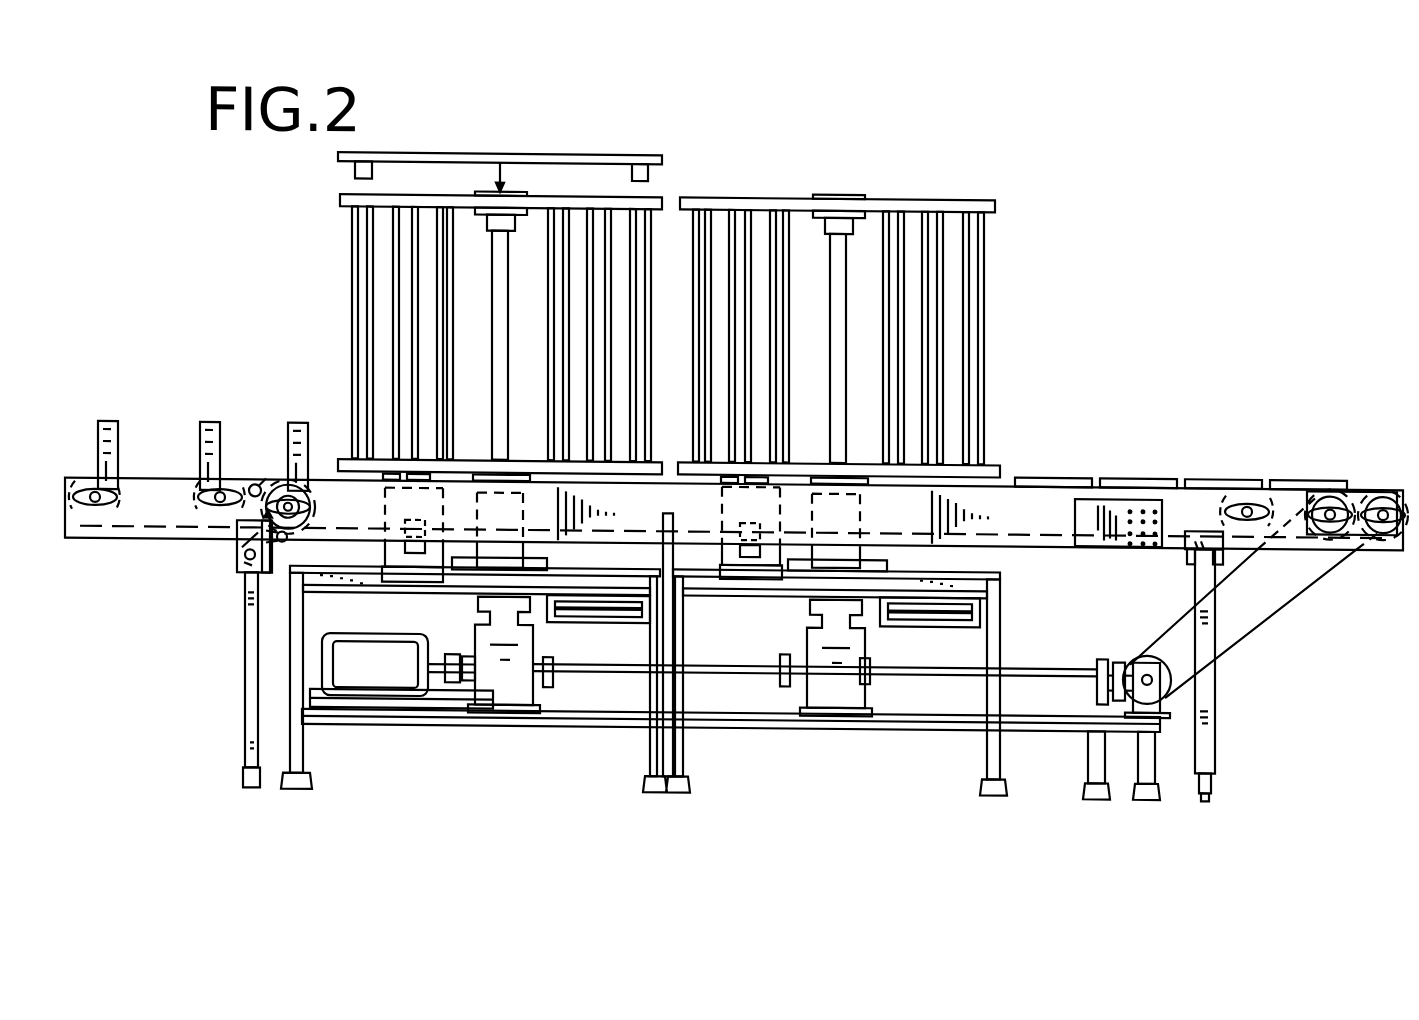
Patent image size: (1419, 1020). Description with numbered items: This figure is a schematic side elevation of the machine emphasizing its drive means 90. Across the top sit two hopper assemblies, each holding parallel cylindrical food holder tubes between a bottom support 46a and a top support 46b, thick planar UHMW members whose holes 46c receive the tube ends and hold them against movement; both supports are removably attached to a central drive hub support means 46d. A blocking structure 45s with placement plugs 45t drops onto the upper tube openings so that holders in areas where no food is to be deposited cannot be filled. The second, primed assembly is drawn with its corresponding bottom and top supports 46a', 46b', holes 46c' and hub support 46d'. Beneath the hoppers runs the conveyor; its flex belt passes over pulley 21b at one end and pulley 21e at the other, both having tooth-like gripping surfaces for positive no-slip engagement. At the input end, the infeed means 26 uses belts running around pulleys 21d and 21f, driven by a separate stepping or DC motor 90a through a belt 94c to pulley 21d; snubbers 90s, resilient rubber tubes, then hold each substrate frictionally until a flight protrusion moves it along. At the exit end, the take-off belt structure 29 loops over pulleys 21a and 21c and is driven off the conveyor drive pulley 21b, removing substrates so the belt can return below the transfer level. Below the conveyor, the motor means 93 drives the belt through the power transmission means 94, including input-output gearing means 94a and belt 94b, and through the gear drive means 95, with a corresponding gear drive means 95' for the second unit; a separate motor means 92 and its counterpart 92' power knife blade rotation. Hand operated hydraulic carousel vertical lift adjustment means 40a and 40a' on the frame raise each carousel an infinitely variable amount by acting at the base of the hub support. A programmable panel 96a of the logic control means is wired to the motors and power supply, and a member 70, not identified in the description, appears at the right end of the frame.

The infeed means 26 is at (170, 546).
The pulley 21a is at (1383, 500).
The pulley 21b is at (1330, 500).
The pulley 21c is at (1248, 500).
The pulley 21d is at (310, 505).
The pulley 21e is at (218, 522).
The pulley 21f is at (93, 522).
The take-off belt structure 29 is at (1362, 530).
The blocking structure 45s is at (603, 149).
The placement plugs 45t is at (649, 172).
The bottom support 46a is at (476, 430).
The lower cross bar 46a' is at (867, 442).
The top support 46b is at (446, 188).
The upper cross bar 46b' is at (888, 188).
The holes 46c is at (501, 311).
The guide rods 46c' is at (851, 302).
The central drive hub support means 46d is at (516, 313).
The center shaft 46d' is at (859, 310).
The carousel vertical lift adjustment means 40a is at (645, 617).
The mounting plate 40a' is at (930, 632).
The support leg 70 is at (1215, 745).
The drive means 90 is at (405, 733).
The motor 90a is at (247, 578).
The snubbers 90s is at (258, 474).
The motor means 92 is at (464, 536).
The housing 92' is at (783, 533).
The motor means 93 is at (408, 643).
The power transmission means 94 is at (628, 665).
The input-output gearing means 94a is at (1173, 666).
The belt 94b is at (1253, 608).
The belt 94c is at (287, 538).
The gear drive means 95 is at (481, 654).
The gearbox 95' is at (814, 657).
The programmable panel 96a is at (1107, 528).